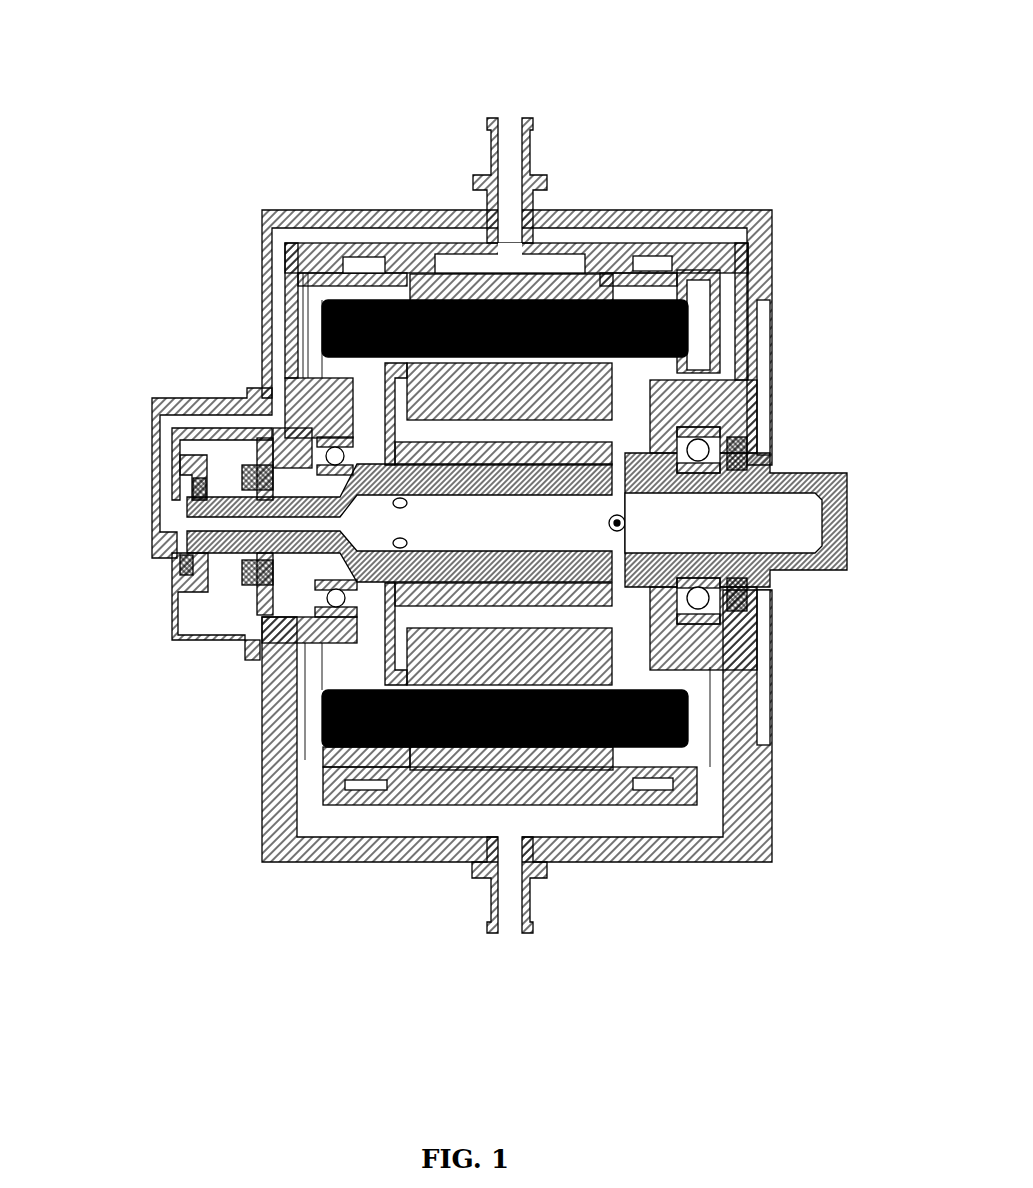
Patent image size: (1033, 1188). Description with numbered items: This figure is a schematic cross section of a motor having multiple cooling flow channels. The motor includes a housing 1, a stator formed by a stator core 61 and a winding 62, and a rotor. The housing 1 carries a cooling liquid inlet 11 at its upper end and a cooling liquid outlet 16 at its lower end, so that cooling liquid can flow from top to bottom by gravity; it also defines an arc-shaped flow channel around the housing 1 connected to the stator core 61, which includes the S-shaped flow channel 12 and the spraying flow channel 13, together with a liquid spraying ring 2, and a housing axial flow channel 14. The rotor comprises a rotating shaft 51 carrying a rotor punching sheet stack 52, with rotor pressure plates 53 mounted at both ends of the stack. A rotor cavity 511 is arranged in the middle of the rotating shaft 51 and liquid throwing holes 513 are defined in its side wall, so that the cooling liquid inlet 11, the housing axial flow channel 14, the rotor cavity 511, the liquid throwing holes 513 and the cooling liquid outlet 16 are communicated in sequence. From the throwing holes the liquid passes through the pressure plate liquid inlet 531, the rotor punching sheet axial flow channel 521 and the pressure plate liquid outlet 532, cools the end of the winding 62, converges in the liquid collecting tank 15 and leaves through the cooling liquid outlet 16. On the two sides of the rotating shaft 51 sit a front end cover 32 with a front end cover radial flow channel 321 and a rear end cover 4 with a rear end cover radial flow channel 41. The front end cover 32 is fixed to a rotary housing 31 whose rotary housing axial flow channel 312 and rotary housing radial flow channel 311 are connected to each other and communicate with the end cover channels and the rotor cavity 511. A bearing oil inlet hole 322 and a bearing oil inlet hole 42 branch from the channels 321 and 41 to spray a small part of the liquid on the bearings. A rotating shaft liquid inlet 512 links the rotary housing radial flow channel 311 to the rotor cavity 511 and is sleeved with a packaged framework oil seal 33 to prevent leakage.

The housing 1 is at (610, 218).
The liquid spraying ring 2 is at (622, 762).
The rear end cover 4 is at (770, 267).
The cooling liquid inlet 11 is at (510, 128).
The S-shaped flow channel 12 is at (472, 264).
The spraying flow channel 13 is at (655, 263).
The housing axial flow channel 14 is at (362, 233).
The liquid collecting tank 15 is at (590, 823).
The cooling liquid outlet 16 is at (511, 906).
The rotary housing 31 is at (170, 543).
The front end cover 32 is at (262, 330).
The packaged framework oil seal 33 is at (208, 525).
The rear end cover radial flow channel 41 is at (772, 213).
The bearing oil inlet hole 42 is at (845, 530).
The rotating shaft 51 is at (787, 573).
The rotor punching sheet stack 52 is at (530, 413).
The rotor pressure plate 53 is at (623, 650).
The stator core 61 is at (493, 760).
The winding 62 is at (407, 711).
The rotary housing radial flow channel 311 is at (165, 475).
The rotary housing axial flow channel 312 is at (203, 422).
The front end cover radial flow channel 321 is at (278, 293).
The bearing oil inlet hole 322 is at (238, 545).
The rotor cavity 511 is at (688, 525).
The rotating shaft liquid inlet 512 is at (200, 500).
The liquid throwing hole 513 is at (617, 523).
The rotor punching sheet axial flow channel 521 is at (530, 432).
The pressure plate liquid inlet 531 is at (722, 443).
The pressure plate liquid outlet 532 is at (400, 407).